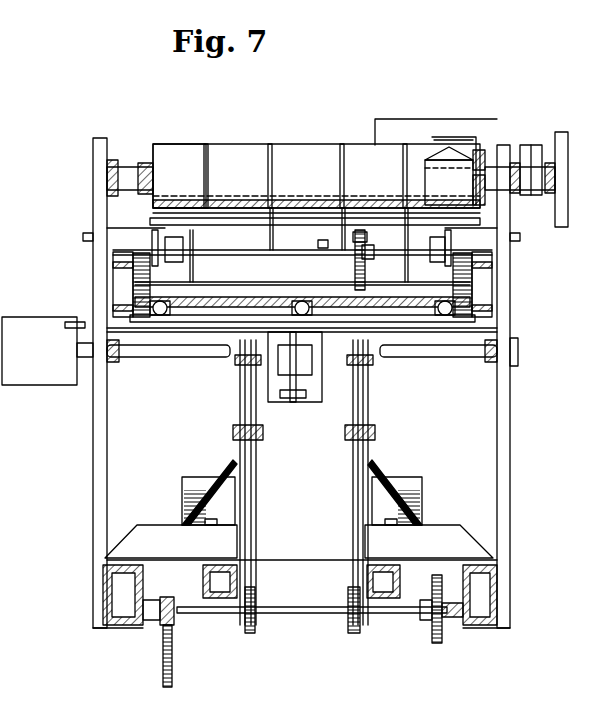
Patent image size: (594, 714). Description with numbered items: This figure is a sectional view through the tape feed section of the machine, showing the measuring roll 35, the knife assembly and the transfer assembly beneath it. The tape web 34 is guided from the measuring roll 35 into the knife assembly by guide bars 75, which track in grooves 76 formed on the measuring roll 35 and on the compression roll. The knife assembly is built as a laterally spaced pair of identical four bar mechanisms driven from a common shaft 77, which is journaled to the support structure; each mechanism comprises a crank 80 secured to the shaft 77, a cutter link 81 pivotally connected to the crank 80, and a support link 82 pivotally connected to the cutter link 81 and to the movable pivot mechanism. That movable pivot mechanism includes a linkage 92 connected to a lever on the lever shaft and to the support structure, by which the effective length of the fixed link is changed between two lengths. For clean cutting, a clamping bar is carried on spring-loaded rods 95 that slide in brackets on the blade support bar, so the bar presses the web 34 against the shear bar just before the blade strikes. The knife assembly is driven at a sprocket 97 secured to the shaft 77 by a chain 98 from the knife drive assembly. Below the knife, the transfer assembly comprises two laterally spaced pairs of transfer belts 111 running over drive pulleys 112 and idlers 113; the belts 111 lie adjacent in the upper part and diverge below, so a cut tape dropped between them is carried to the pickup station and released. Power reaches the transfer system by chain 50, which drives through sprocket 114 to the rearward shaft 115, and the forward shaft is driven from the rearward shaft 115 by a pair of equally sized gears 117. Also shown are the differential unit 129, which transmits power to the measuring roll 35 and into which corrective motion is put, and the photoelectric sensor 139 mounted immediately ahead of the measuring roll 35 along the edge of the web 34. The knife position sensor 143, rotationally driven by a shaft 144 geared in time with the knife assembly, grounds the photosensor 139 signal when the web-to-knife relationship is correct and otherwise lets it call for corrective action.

The tape web 34 is at (275, 143).
The measuring roll 35 is at (190, 176).
The grooves 76 is at (268, 170).
The sprocket 97 is at (365, 240).
The photoelectric sensor 139 is at (465, 194).
The differential unit 129 is at (444, 130).
The cutter link 81 is at (147, 240).
The crank 80 is at (150, 252).
The support link 82 is at (120, 262).
The guide bars 75 is at (273, 236).
The shaft 77 is at (345, 238).
The chain 98 is at (362, 252).
The rods 95 is at (160, 301).
The knife position sensor 143 is at (55, 362).
The shaft 144 is at (175, 348).
The idlers 113 is at (255, 360).
The linkage 92 is at (308, 386).
The transfer belts 111 is at (258, 470).
The drive pulleys 112 is at (350, 600).
The sprocket 114 is at (178, 612).
The rearward shaft 115 is at (310, 615).
The gears 117 is at (435, 637).
The chain 50 is at (172, 672).